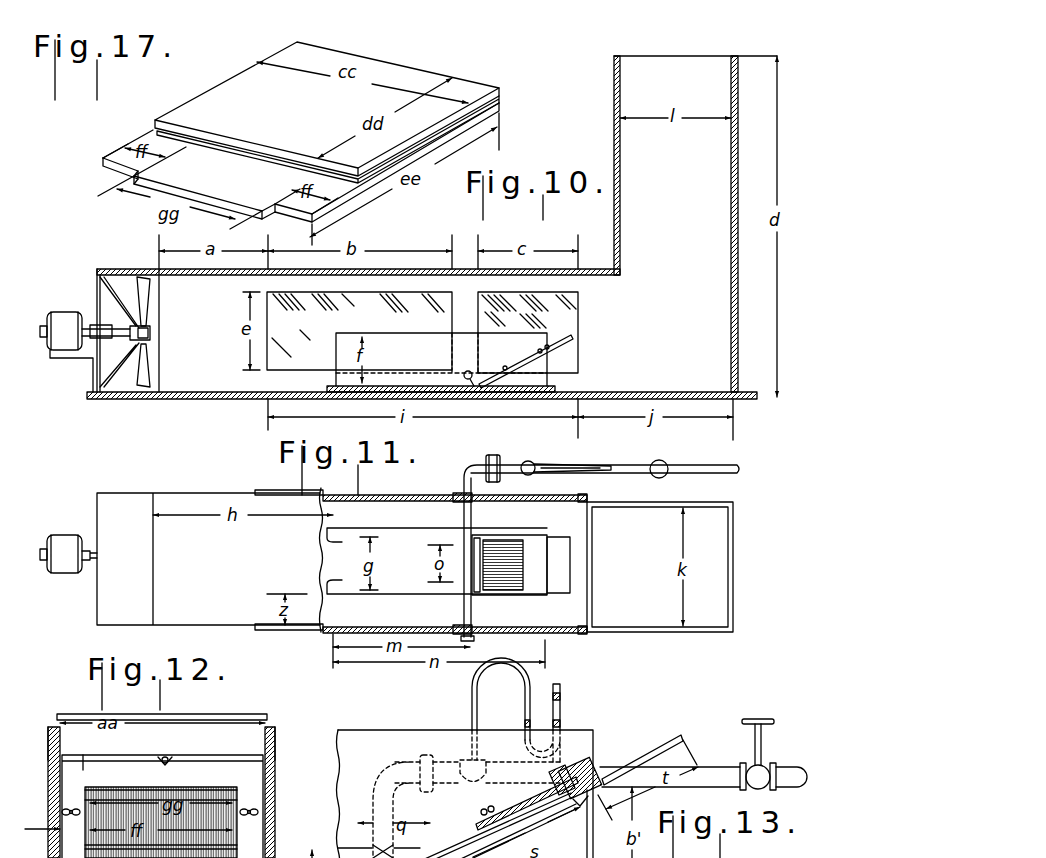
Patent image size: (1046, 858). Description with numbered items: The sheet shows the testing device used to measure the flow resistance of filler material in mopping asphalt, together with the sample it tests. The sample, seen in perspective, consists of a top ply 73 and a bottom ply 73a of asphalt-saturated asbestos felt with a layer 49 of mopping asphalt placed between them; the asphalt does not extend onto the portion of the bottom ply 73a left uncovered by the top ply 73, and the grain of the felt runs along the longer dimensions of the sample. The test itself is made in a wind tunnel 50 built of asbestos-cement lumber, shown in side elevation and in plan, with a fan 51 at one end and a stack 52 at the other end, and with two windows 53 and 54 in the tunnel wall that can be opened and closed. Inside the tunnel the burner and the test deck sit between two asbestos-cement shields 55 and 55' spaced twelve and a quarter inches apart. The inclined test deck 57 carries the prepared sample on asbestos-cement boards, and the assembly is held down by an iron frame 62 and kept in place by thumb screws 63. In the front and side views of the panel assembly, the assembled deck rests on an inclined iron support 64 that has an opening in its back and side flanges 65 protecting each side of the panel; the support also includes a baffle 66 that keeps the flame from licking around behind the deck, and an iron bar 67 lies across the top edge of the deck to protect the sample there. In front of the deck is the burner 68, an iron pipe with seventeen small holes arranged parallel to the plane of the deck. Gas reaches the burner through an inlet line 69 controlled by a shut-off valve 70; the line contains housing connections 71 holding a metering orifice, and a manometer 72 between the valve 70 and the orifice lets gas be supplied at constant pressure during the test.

In FIG. 17, the layer of mopping asphalt 49 is at (500, 98).
In FIG. 10, the wind tunnel 50 is at (186, 273).
In FIG. 10, the fan 51 is at (143, 371).
In FIG. 10, the stack 52 is at (614, 99).
In FIG. 10, the window 53 is at (280, 340).
In FIG. 10, the window 54 is at (578, 304).
In FIG. 11, the shield 55 is at (397, 542).
In FIG. 12, the shield 55 is at (36, 752).
In FIG. 11, the shield 55' is at (397, 577).
In FIG. 12, the shield 55' is at (298, 750).
In FIG. 11, the inclined test deck 57 is at (508, 550).
In FIG. 12, the iron frame 62 is at (250, 832).
In FIG. 12, the thumb screws 63 is at (175, 757).
In FIG. 13, the inclined support 64 is at (590, 759).
In FIG. 12, the side flanges 65 is at (60, 801).
In FIG. 13, the baffle 66 is at (650, 748).
In FIG. 12, the iron bar 67 is at (83, 755).
In FIG. 13, the iron bar 67 is at (598, 762).
In FIG. 11, the burner 68 is at (468, 543).
In FIG. 11, the inlet line 69 is at (718, 466).
In FIG. 13, the inlet line 69 is at (788, 767).
In FIG. 11, the shut off valve 70 is at (655, 462).
In FIG. 13, the shut off valve 70 is at (753, 771).
In FIG. 11, the housing connections 71 is at (490, 455).
In FIG. 13, the housing connections 71 is at (425, 757).
In FIG. 11, the manometer 72 is at (553, 436).
In FIG. 13, the manometer 72 is at (472, 702).
In FIG. 17, the top ply 73 is at (257, 78).
In FIG. 12, the top ply 73 is at (208, 800).
In FIG. 13, the top ply 73 is at (487, 824).
In FIG. 17, the bottom ply 73a is at (103, 161).
In FIG. 13, the bottom ply 73a is at (458, 845).